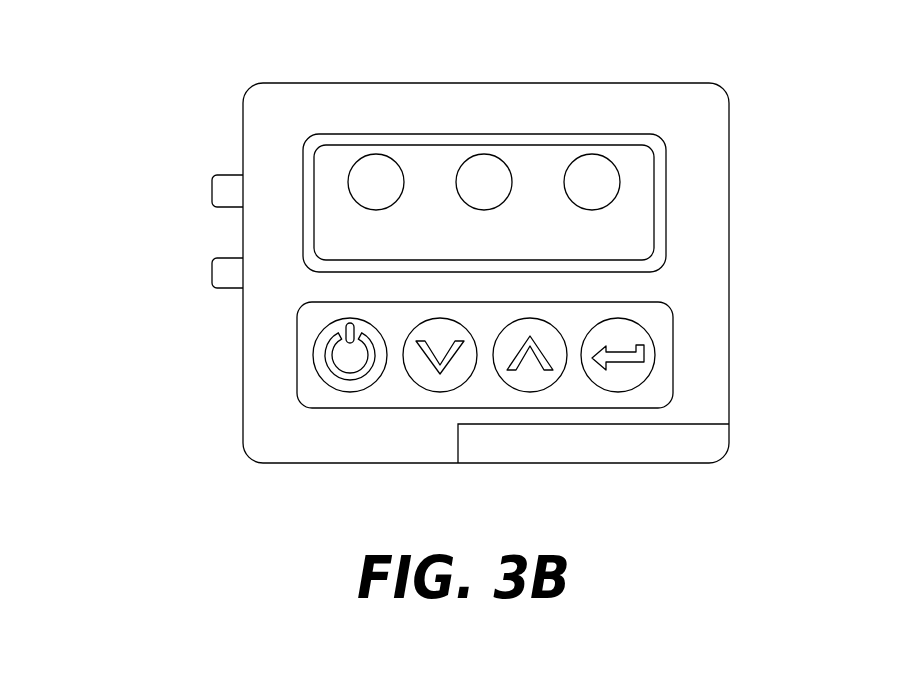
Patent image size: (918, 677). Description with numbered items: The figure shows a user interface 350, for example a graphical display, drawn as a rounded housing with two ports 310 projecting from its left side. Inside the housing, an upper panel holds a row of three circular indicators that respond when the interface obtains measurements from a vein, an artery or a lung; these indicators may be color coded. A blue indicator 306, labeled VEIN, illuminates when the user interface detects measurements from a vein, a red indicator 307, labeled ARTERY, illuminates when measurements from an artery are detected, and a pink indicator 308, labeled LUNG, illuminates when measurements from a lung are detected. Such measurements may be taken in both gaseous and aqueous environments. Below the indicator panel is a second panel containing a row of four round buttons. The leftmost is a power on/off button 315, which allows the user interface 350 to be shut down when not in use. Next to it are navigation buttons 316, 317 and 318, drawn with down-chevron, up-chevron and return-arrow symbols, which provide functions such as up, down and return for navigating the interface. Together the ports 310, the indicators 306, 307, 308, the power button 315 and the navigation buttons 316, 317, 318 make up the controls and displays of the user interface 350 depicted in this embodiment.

The user interface 350 is at (153, 62).
The ports 310 is at (212, 179).
The blue indicator 306 is at (380, 167).
The red indicator 307 is at (484, 167).
The pink indicator 308 is at (592, 167).
The power on/off button 315 is at (333, 382).
The navigation button 316 is at (441, 382).
The navigation button 317 is at (531, 382).
The navigation button 318 is at (622, 382).